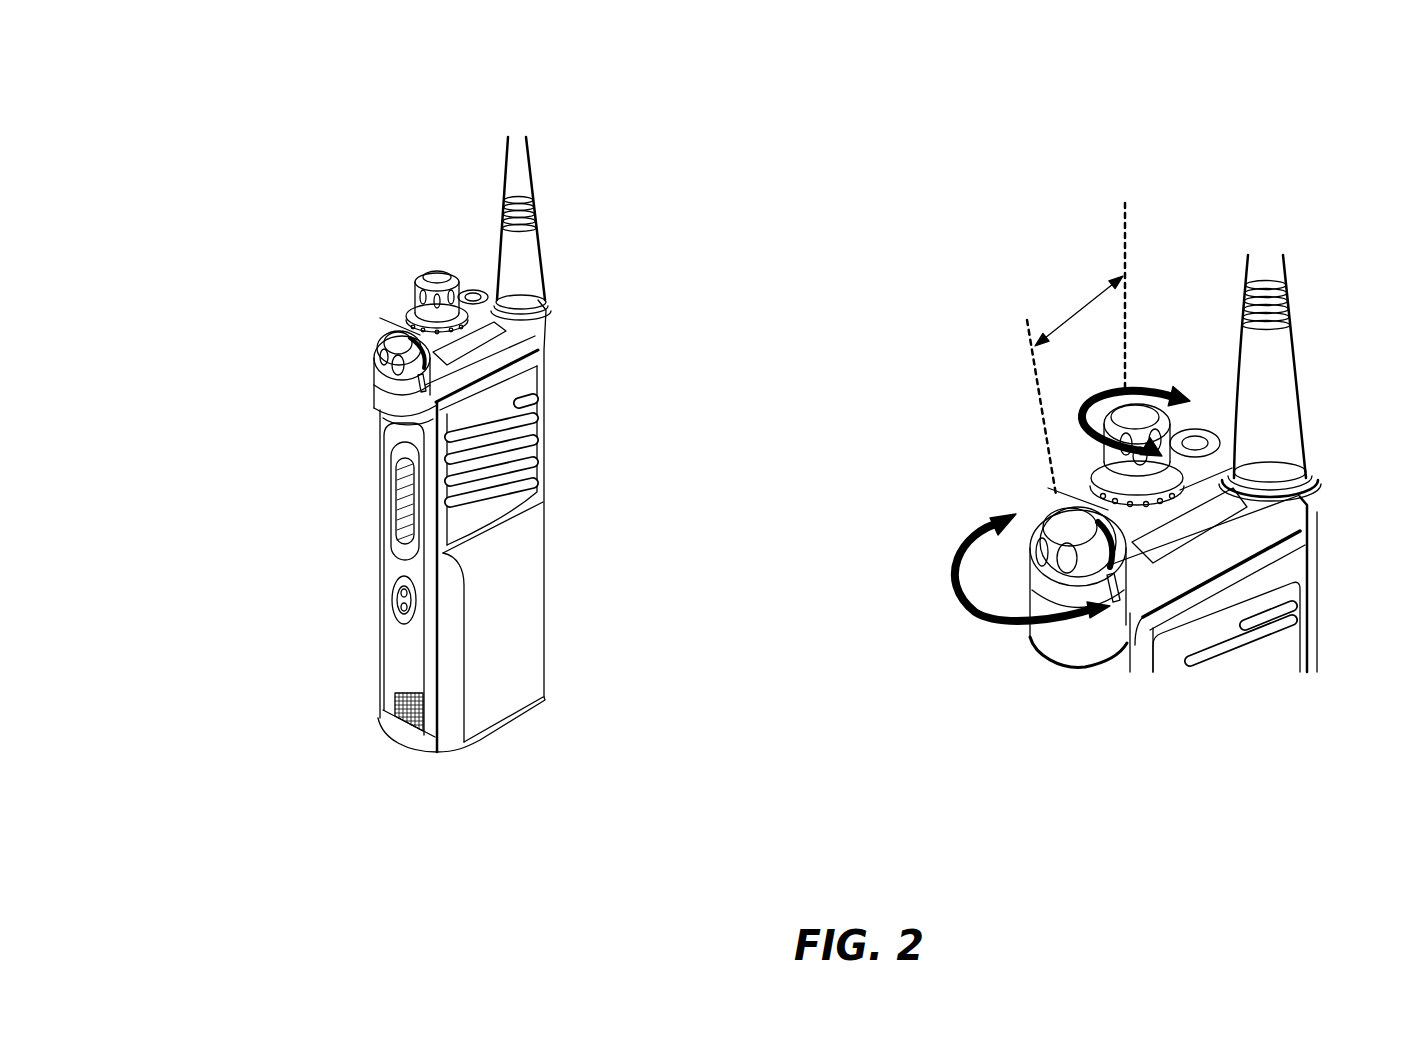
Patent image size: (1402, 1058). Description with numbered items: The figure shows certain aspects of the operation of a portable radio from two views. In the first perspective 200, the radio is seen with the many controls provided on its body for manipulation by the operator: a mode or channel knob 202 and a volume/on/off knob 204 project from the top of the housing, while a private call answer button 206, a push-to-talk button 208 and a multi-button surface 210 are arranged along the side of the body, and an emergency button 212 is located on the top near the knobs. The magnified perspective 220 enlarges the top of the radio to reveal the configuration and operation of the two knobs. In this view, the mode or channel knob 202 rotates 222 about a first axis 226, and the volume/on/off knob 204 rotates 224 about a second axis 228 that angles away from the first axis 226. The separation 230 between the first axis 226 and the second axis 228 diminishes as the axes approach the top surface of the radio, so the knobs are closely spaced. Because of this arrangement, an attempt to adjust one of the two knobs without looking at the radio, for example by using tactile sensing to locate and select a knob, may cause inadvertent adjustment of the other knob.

The first perspective 200 is at (216, 76).
The mode or channel knob 202 is at (399, 274).
The volume/on/off knob 204 is at (357, 345).
The private call answer button 206 is at (355, 427).
The push-to-talk button 208 is at (355, 505).
The multi-button surface 210 is at (355, 603).
The emergency button 212 is at (466, 255).
The magnified perspective 220 is at (889, 216).
The rotation of channel knob 222 is at (1108, 383).
The rotation of volume/on/off knob 224 is at (957, 546).
The first axis 226 is at (1128, 222).
The second axis 228 is at (1020, 322).
The separation 230 is at (1090, 296).